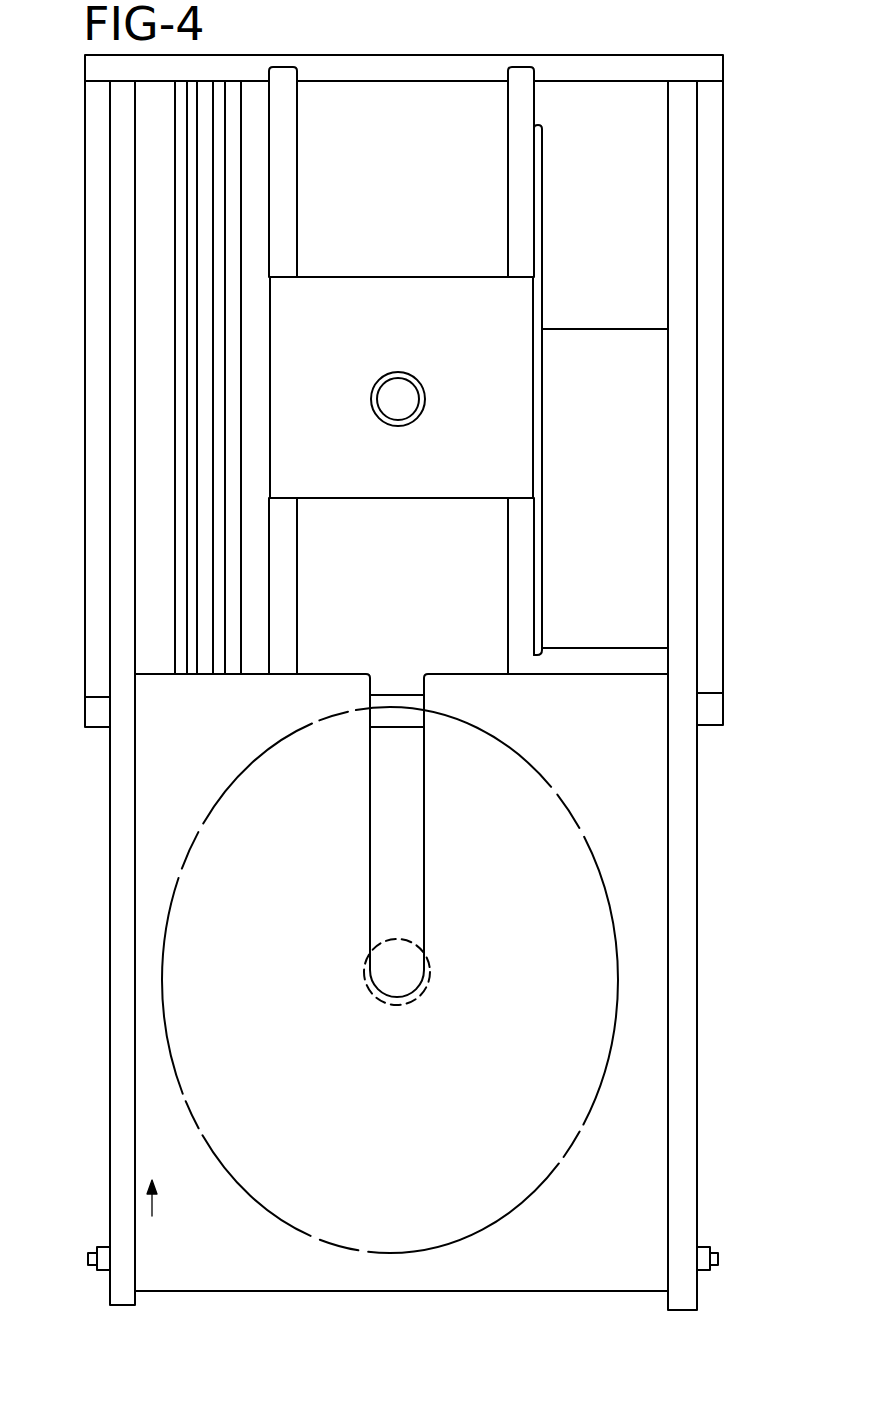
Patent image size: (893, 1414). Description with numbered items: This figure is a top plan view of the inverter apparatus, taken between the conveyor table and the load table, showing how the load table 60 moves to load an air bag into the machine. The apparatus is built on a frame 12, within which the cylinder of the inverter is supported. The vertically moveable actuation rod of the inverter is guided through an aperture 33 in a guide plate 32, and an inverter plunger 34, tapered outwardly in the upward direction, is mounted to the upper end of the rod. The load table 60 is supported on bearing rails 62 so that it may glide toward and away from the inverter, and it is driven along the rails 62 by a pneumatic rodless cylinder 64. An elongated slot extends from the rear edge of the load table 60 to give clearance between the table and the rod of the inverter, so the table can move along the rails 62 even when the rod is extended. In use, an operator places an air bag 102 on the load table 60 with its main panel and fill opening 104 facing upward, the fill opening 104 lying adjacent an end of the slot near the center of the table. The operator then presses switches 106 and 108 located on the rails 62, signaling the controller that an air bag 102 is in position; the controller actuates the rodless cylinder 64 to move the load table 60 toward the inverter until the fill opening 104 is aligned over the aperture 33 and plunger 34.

The frame 12 is at (83, 464).
The guide plate 32 is at (398, 288).
The aperture 33 is at (378, 412).
The inverter plunger 34 is at (390, 385).
The load table 60 is at (565, 1272).
The bearing rails 62 is at (108, 810).
The pneumatic rodless cylinder 64 is at (190, 277).
The air bag 102 is at (170, 1080).
The fill opening 104 is at (430, 972).
The switch 106 is at (93, 1246).
The switch 108 is at (708, 1250).